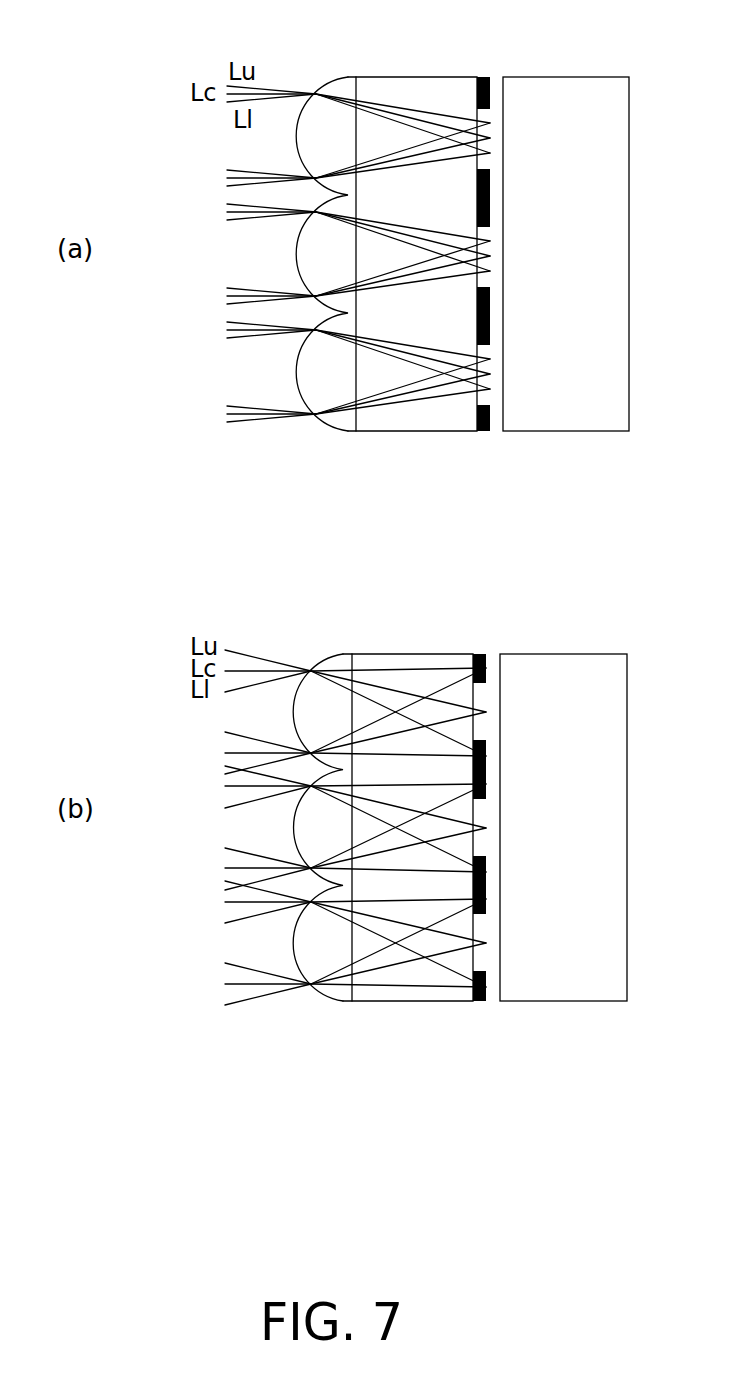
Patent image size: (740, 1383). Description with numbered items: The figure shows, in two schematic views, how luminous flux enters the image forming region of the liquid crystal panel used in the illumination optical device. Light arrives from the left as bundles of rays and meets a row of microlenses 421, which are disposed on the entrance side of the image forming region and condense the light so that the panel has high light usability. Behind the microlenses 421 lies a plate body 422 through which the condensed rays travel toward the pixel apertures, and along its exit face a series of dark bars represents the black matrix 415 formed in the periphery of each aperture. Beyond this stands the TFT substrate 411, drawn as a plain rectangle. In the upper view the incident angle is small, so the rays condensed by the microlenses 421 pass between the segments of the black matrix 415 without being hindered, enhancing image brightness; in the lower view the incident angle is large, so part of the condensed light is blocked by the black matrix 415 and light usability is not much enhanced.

The microlenses 421 is at (346, 88).
The lens substrate / lens body 422 is at (432, 88).
The black matrix 415 is at (480, 433).
The TFT substrate 411 is at (573, 88).